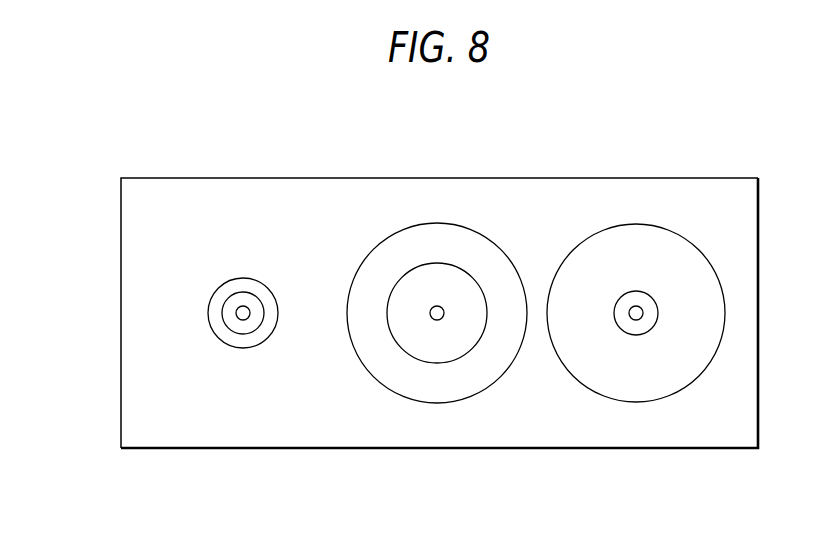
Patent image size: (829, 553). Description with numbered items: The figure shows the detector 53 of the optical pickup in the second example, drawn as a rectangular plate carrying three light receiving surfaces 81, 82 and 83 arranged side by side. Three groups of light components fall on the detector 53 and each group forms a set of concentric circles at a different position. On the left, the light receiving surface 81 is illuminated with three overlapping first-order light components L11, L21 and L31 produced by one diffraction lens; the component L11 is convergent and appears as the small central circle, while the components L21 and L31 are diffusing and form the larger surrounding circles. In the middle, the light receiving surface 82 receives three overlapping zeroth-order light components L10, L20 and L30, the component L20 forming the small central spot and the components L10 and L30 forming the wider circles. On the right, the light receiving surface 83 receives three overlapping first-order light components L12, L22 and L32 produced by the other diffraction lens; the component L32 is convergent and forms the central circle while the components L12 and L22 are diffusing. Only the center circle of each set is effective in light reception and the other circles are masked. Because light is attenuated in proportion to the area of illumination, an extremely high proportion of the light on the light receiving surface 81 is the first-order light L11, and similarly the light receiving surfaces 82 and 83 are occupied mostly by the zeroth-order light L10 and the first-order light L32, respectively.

The detector 53 is at (553, 178).
The light receiving surface 81 is at (183, 313).
The light receiving surface 82 is at (437, 313).
The light receiving surface 83 is at (682, 313).
The first-order light component L11 is at (236, 313).
The first-order light component L21 is at (225, 333).
The first-order light component L31 is at (258, 345).
The zeroth-order light component L10 is at (383, 388).
The zeroth-order light component L20 is at (437, 320).
The zeroth-order light component L30 is at (465, 357).
The first-order light component L12 is at (593, 395).
The first-order light component L22 is at (641, 336).
The first-order light component L32 is at (643, 313).